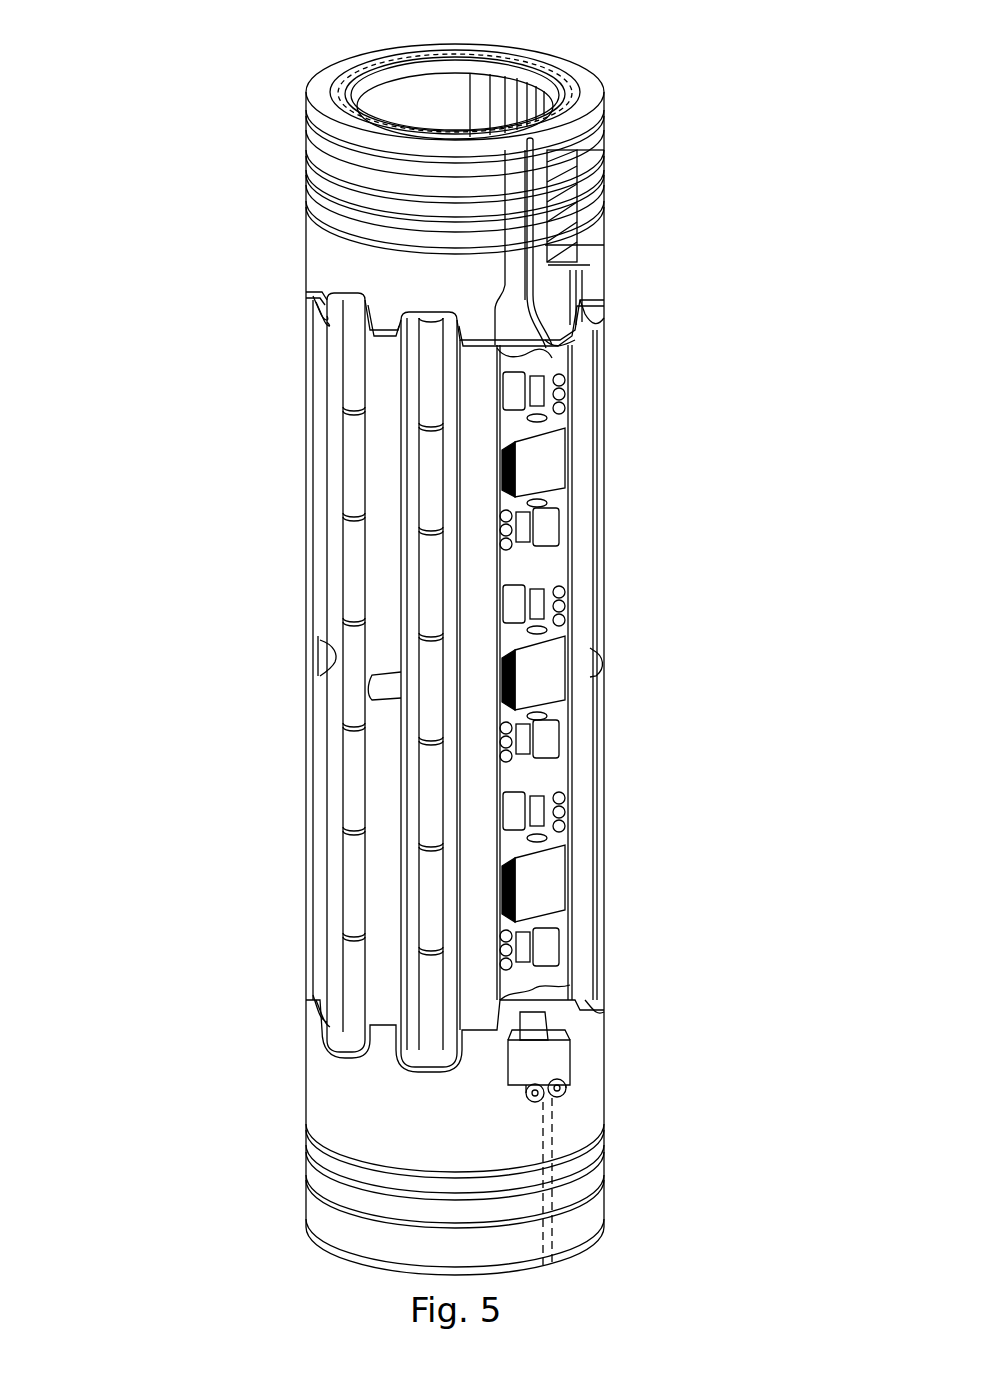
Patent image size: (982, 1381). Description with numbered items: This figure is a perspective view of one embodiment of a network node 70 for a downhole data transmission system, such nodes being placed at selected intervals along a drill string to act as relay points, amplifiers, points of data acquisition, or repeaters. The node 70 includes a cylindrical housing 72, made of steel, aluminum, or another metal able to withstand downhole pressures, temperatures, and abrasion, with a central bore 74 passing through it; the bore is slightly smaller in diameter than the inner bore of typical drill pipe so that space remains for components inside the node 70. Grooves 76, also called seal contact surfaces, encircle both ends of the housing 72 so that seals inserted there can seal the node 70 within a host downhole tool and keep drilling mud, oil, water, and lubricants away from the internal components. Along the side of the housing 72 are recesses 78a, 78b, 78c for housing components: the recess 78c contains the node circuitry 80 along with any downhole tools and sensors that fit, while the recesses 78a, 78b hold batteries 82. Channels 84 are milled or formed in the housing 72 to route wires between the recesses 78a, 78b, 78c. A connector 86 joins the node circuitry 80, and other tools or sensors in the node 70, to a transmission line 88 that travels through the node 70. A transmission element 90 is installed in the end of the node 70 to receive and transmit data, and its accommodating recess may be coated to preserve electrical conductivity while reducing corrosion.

The node 70 is at (232, 135).
The cylindrical housing 72 is at (325, 262).
The central bore 74 is at (428, 100).
The grooves 76 is at (606, 187).
The recess 78a is at (330, 875).
The recess 78b is at (410, 940).
The recess 78c is at (578, 770).
The node circuitry 80 is at (552, 665).
The batteries 82 is at (433, 378).
The channels 84 is at (322, 318).
The connector 86 is at (553, 1045).
The transmission line 88 is at (604, 243).
The transmission element 90 is at (595, 92).